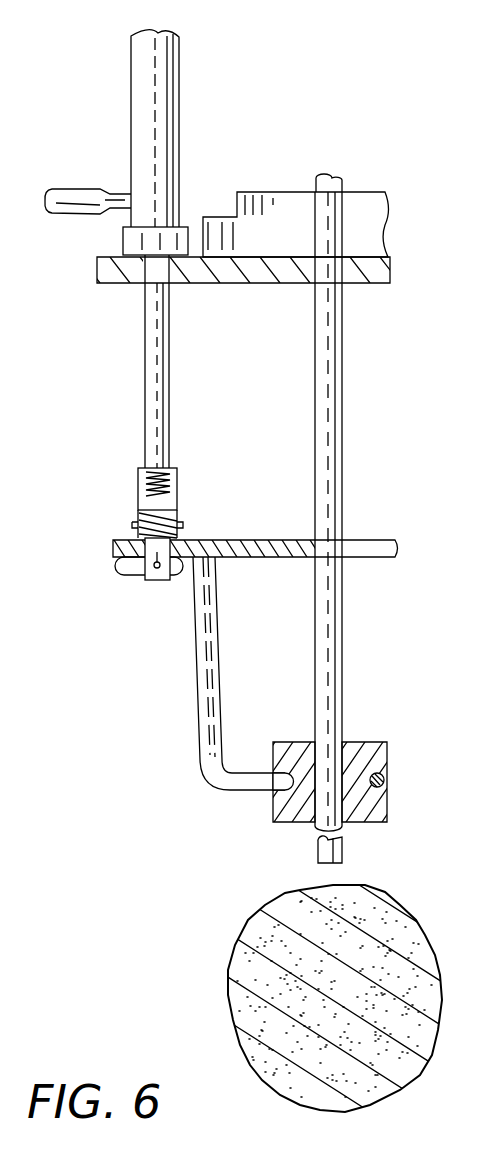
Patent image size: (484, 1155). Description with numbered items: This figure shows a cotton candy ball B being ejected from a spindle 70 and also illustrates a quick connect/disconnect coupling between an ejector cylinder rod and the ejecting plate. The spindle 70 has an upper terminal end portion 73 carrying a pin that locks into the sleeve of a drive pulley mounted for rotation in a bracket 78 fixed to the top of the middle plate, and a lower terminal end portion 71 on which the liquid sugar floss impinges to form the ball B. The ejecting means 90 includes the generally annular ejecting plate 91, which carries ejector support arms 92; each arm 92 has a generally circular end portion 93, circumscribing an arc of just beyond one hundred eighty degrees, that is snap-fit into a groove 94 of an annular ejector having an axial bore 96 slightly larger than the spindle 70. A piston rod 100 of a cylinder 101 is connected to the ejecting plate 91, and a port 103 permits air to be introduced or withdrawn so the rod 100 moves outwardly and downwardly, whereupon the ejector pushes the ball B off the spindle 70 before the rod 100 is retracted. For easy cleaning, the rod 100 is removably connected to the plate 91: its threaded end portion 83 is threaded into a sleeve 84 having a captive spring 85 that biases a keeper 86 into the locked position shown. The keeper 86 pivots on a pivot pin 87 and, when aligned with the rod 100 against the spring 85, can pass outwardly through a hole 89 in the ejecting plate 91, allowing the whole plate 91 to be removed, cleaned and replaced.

The spindle 70 is at (346, 431).
The lower terminal end portion 71 is at (317, 847).
The upper terminal end portion 73 is at (323, 337).
The bracket 78 is at (347, 234).
The threaded end portion 83 is at (183, 472).
The sleeve 84 is at (178, 493).
The captive spring 85 is at (140, 513).
The keeper 86 is at (130, 567).
The pivot pin 87 is at (157, 582).
The hole 89 is at (192, 540).
The ejecting means 90 is at (114, 353).
The ejecting plate 91 is at (267, 548).
The ejector support arm 92 is at (202, 667).
The circular end portion 93 is at (387, 778).
The groove 94 is at (273, 797).
The axial bore 96 is at (322, 752).
The piston rod 100 is at (148, 303).
The cylinder 101 is at (160, 83).
The port 103 is at (123, 193).
The cotton candy ball B is at (238, 1005).